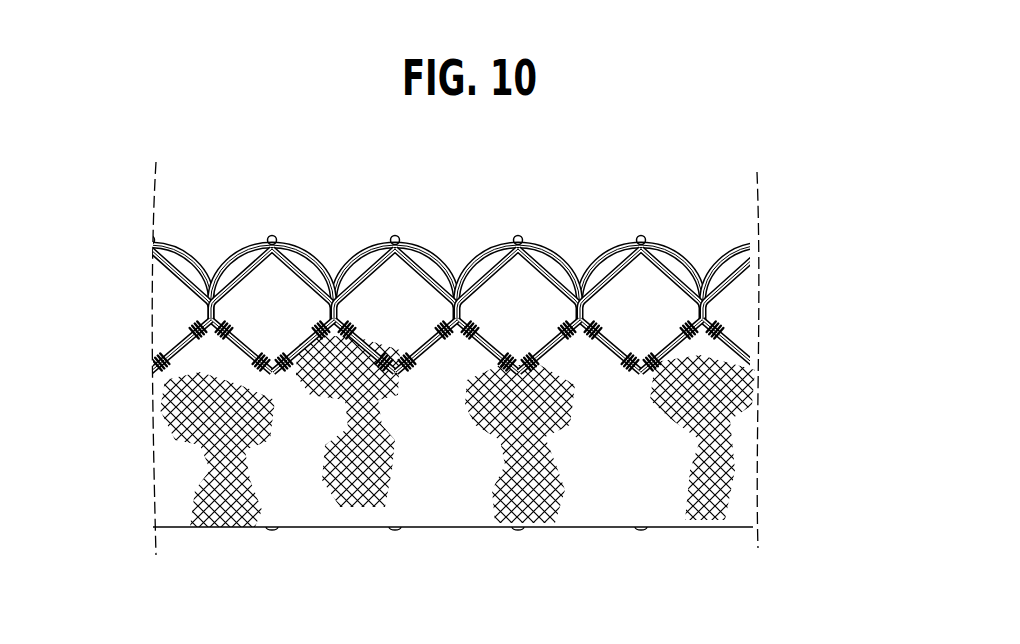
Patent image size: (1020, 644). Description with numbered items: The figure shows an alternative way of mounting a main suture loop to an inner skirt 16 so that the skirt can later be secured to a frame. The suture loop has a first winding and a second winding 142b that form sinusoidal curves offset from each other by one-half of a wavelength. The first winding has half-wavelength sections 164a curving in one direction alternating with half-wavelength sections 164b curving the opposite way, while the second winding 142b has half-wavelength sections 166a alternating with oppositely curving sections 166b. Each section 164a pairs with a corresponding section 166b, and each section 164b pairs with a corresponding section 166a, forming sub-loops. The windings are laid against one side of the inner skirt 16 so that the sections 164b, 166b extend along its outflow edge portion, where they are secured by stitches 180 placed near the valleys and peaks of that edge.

The inner skirt 16 is at (707, 487).
The second winding 142b is at (303, 251).
The half-wavelength sections of the first winding 164a is at (185, 248).
The half-wavelength sections of the second winding 166a is at (255, 245).
The half-wavelength sections of the first winding 164b is at (236, 344).
The half-wavelength sections of the second winding 166b is at (182, 343).
The stitches 180 is at (374, 369).